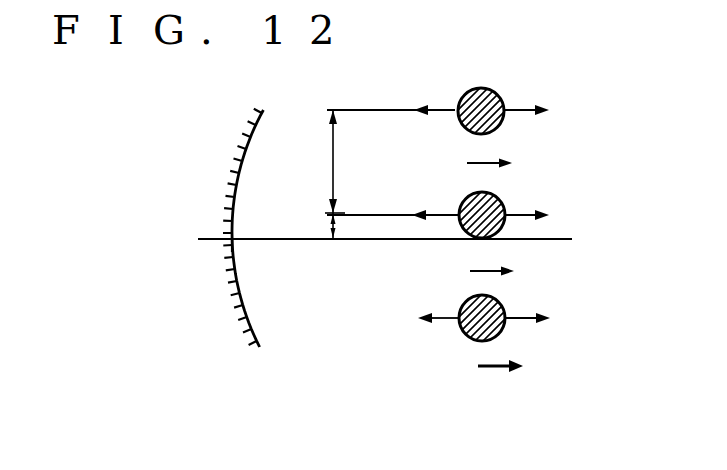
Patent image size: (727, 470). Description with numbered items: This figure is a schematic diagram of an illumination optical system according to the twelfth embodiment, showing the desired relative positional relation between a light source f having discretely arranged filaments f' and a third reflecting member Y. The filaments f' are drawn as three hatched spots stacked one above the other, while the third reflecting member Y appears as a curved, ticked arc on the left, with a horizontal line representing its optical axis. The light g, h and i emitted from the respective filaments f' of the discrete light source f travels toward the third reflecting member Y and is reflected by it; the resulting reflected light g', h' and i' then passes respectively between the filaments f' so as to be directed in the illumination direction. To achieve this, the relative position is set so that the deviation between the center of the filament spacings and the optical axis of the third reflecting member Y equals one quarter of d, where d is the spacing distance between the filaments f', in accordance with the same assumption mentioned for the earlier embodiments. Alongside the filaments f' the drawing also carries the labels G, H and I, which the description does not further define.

The third reflecting member Y is at (258, 346).
The filaments f' is at (479, 93).
The light emitted from filament g is at (434, 125).
The rightward displacement arrow of upper spot G is at (538, 113).
The reflected light i' is at (498, 162).
The spacing distance between filaments d is at (324, 174).
The light emitted from filament h is at (424, 215).
The rightward displacement arrow of middle spot H is at (538, 218).
The reflected light h' is at (505, 271).
The light source f is at (470, 353).
The rightward displacement arrow of lower spot I is at (561, 329).
The reflected light g' is at (516, 368).